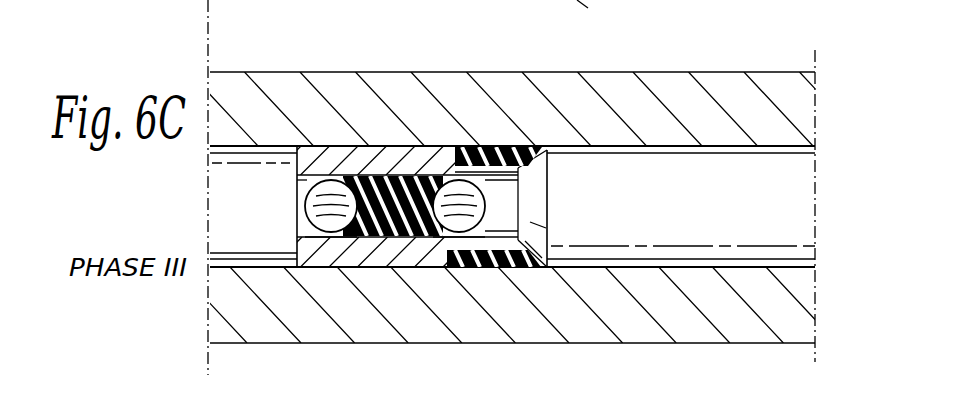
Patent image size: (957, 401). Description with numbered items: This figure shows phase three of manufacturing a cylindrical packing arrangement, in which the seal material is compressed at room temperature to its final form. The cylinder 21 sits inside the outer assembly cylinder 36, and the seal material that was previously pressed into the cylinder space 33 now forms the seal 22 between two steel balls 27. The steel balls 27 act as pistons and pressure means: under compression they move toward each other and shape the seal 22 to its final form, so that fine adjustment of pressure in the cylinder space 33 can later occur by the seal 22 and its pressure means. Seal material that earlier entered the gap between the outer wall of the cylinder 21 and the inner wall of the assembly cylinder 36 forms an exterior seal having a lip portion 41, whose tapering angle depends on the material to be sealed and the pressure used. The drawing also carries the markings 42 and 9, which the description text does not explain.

The assembly cylinder 36 is at (253, 104).
The steel balls 27 is at (333, 195).
The cylinder 21 is at (381, 163).
The sealing rings 42 is at (518, 173).
The lip portion 41 is at (545, 173).
The cylinder space 33 is at (262, 203).
The ball seats 9 is at (327, 236).
The seal 22 is at (402, 233).